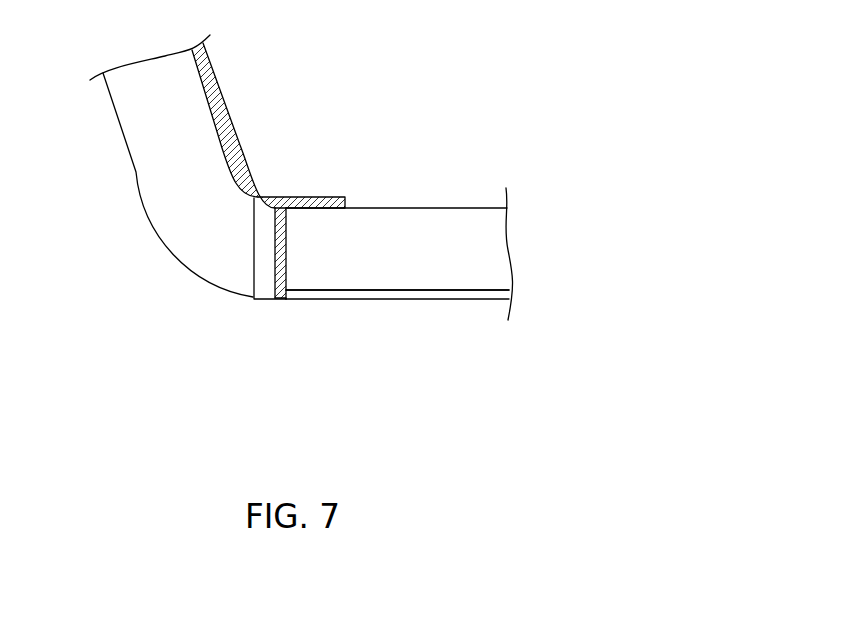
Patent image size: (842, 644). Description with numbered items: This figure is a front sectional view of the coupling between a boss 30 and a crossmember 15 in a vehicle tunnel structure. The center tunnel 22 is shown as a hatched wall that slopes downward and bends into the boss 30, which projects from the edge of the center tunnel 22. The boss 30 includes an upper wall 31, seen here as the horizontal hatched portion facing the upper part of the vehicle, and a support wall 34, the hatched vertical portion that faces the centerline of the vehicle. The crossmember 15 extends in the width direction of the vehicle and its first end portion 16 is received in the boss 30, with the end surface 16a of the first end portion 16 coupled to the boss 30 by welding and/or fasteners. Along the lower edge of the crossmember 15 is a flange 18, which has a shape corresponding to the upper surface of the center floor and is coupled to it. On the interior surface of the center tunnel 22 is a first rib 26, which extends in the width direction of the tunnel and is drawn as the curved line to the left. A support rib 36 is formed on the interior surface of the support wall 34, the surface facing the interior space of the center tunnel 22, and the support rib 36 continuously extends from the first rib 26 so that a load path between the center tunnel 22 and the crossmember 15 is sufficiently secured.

The crossmember 15 is at (467, 208).
The first end portion 16 is at (330, 207).
The end surface 16a is at (281, 300).
The flange 18 is at (420, 299).
The center tunnel 22 is at (203, 73).
The first rib 26 is at (138, 170).
The boss 30 is at (296, 181).
The upper wall 31 is at (312, 197).
The support wall 34 is at (278, 278).
The support rib 36 is at (258, 252).